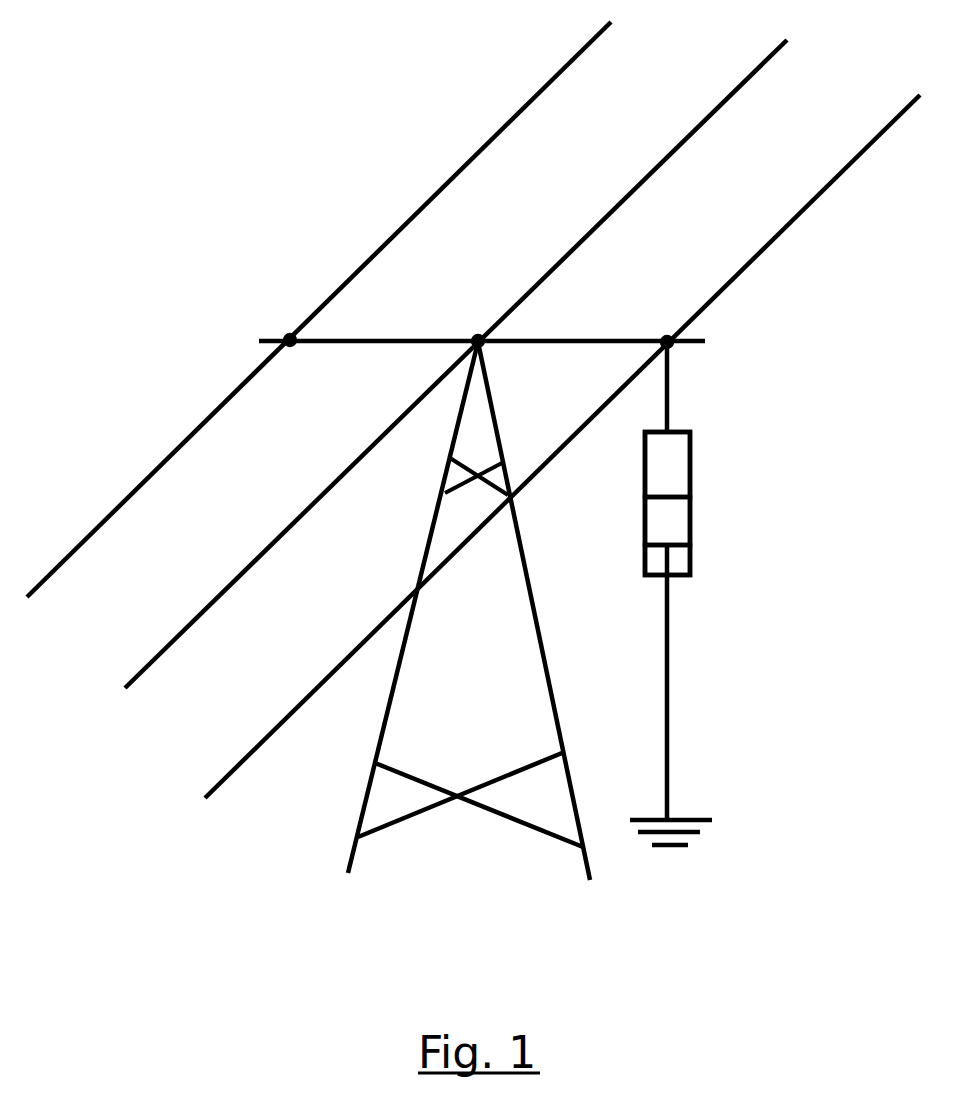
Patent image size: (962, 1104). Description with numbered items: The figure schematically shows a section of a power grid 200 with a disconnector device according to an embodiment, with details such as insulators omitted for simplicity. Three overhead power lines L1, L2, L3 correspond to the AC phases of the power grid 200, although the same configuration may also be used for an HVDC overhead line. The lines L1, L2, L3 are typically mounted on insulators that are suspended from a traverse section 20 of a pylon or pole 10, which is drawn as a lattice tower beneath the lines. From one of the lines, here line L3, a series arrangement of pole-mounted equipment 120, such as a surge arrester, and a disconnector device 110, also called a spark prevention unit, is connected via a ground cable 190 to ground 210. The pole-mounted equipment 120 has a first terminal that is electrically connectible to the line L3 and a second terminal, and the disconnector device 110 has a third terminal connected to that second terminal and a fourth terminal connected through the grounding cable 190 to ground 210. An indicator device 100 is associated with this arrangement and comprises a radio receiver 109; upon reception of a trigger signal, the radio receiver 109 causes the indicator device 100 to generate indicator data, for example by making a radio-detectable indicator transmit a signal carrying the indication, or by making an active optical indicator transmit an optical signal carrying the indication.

The power grid 200 is at (473, 406).
The line L1 is at (407, 223).
The line L2 is at (575, 247).
The line L3 is at (735, 278).
The traverse section 20 is at (417, 340).
The pylon or pole 10 is at (355, 852).
The indicator device 100 is at (698, 493).
The pole-mounted equipment 120 is at (685, 472).
The disconnector device 110 is at (683, 518).
The radio receiver 109 is at (645, 563).
The ground cable 190 is at (667, 675).
The ground 210 is at (697, 832).